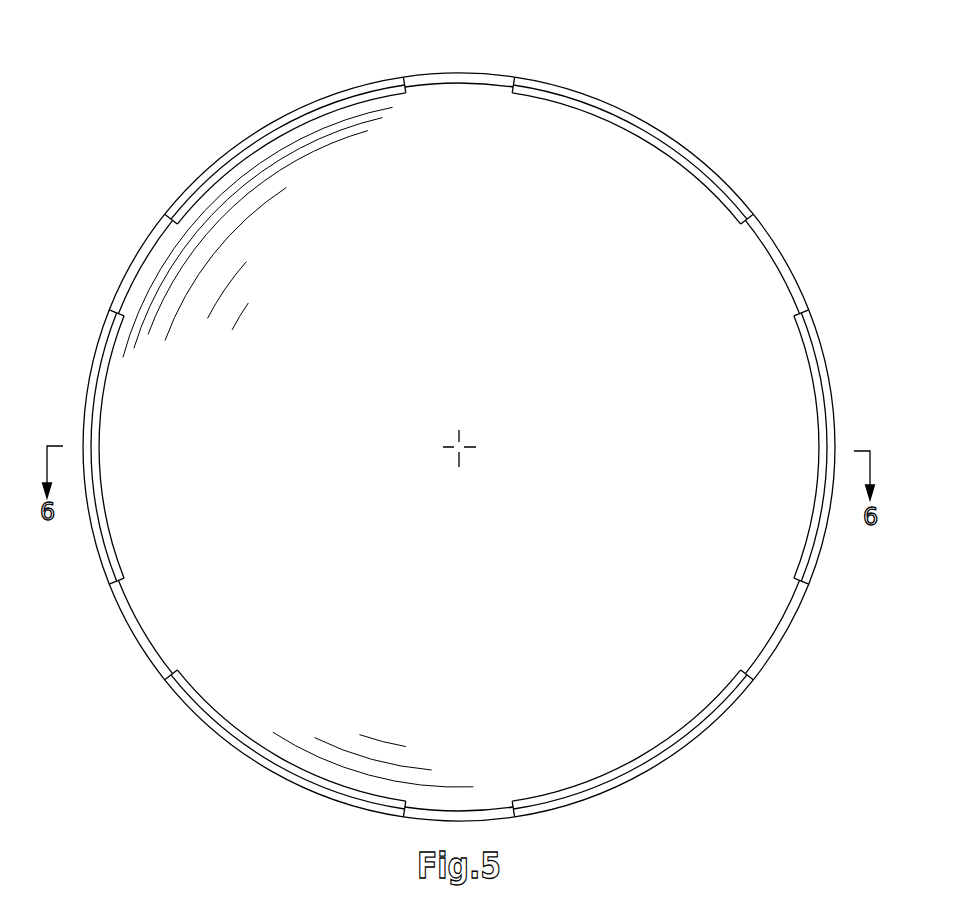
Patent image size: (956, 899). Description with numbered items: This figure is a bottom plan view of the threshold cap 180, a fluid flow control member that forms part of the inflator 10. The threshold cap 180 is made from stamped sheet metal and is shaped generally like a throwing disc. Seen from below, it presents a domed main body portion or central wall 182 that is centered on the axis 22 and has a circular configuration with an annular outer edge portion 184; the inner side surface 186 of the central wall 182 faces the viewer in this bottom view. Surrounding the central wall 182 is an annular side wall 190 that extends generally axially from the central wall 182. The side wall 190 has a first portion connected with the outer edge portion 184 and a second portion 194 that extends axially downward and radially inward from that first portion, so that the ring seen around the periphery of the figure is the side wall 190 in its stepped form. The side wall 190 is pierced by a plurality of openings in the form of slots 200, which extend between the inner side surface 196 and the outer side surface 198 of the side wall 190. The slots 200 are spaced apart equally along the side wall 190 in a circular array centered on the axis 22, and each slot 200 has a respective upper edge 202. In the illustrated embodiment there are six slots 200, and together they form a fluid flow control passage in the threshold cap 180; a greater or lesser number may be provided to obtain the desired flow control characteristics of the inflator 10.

The inflator 10 is at (455, 415).
The axis 22 is at (462, 445).
The threshold cap 180 is at (696, 778).
The central wall 182 is at (674, 153).
The annular outer edge portion 184 is at (682, 232).
The inner side surface 186 is at (328, 240).
The annular side wall 190 is at (815, 326).
The second portion 194 is at (842, 413).
The inner side surface 196 is at (100, 458).
The outer side surface 198 is at (110, 447).
The slots 200 is at (470, 415).
The upper edge 202 is at (445, 74).